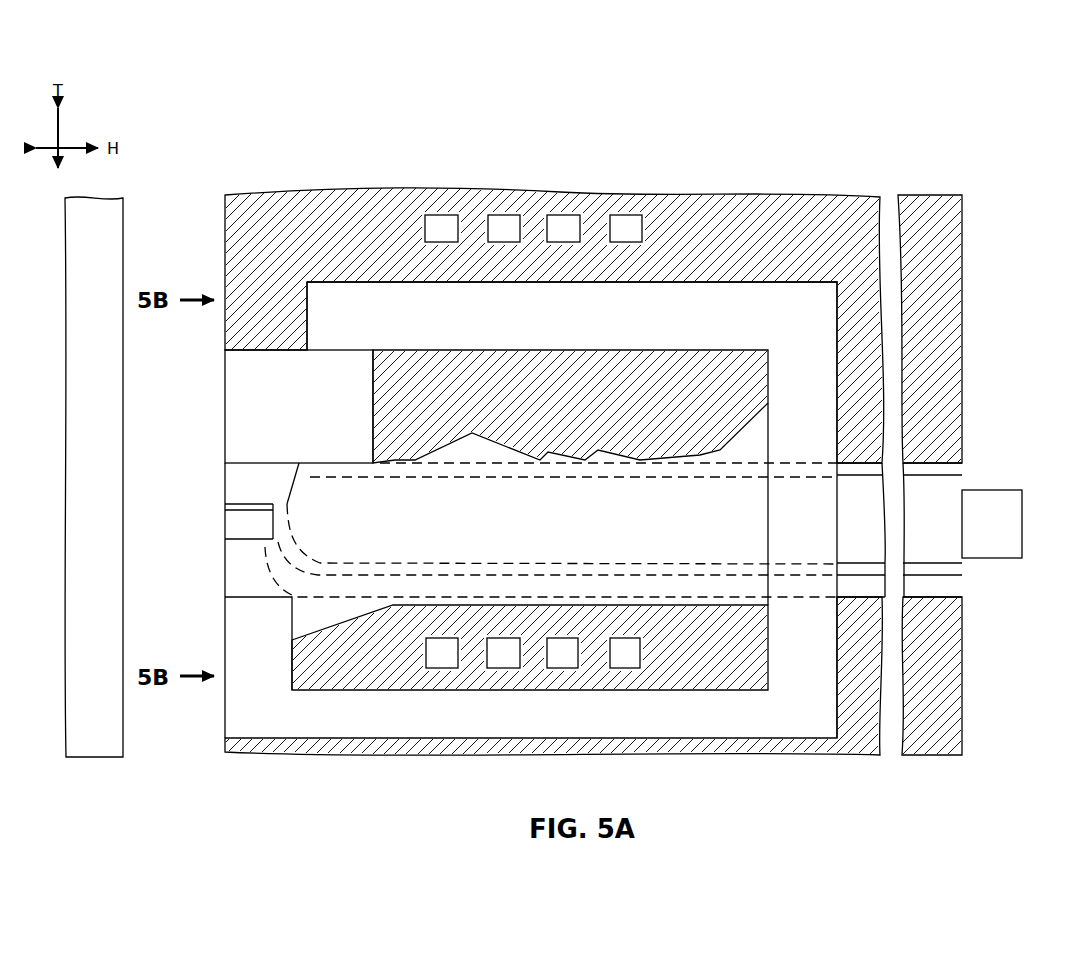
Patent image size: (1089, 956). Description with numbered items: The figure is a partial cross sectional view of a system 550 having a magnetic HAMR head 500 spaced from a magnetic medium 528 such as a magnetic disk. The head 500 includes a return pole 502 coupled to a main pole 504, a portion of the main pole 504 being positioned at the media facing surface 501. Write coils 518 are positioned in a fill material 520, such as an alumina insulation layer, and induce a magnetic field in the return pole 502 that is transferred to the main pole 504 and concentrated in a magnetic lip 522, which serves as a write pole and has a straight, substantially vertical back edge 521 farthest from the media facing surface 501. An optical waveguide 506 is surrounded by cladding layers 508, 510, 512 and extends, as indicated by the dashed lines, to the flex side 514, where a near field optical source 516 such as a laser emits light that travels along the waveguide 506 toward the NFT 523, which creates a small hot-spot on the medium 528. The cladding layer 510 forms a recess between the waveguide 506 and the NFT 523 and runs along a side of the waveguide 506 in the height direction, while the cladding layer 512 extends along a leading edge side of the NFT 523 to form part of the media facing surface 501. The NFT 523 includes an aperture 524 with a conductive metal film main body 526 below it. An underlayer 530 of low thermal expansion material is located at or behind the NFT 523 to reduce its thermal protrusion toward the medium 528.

The magnetic HAMR head 500 is at (1004, 389).
The media facing surface 501 is at (212, 723).
The return pole 502 is at (733, 280).
The main pole 504 is at (299, 406).
The optical waveguide 506 is at (962, 508).
The cladding layer 508 is at (962, 465).
The cladding layer 510 is at (962, 570).
The cladding layer 512 is at (962, 590).
The flex side 514 is at (962, 695).
The near field optical source 516 is at (992, 524).
The write coils 518 is at (505, 215).
The fill material 520 is at (678, 213).
The back edge 521 is at (299, 471).
The magnetic lip 522 is at (225, 480).
The NFT 523 is at (199, 531).
The aperture 524 is at (225, 510).
The conductive metal film main body 526 is at (225, 538).
The magnetic medium 528 is at (94, 477).
The underlayer 530 is at (551, 530).
The system 550 is at (1018, 109).